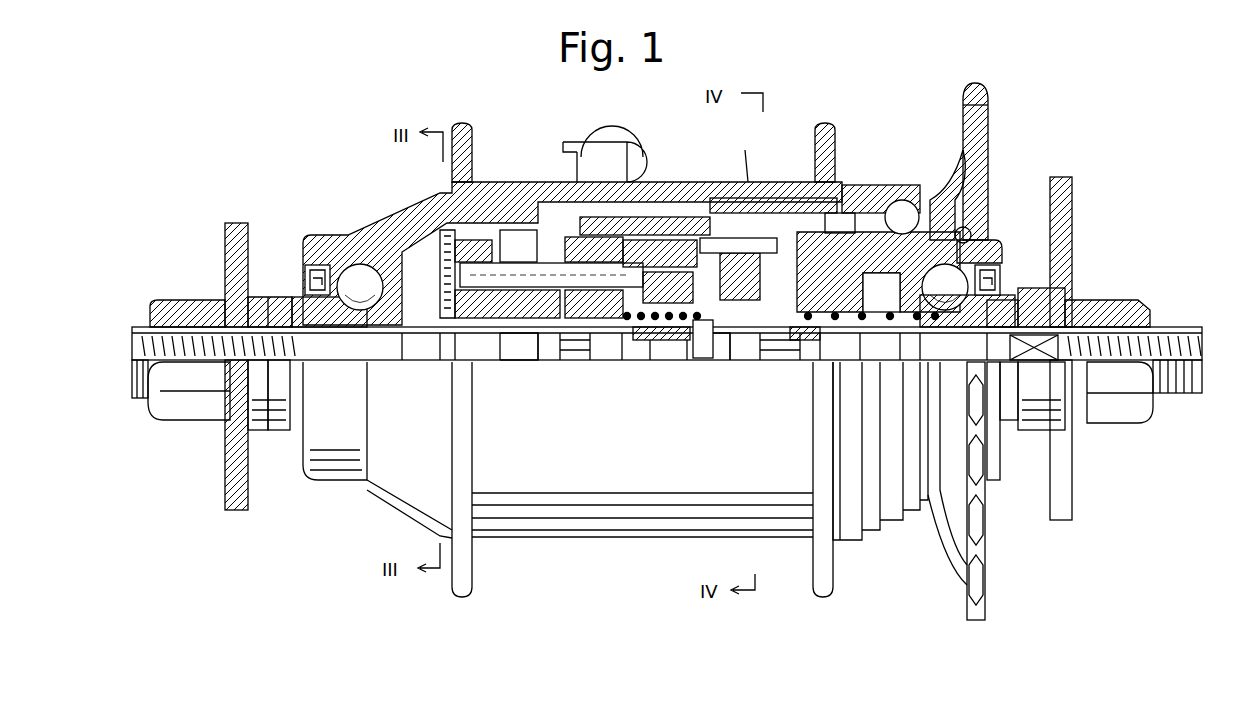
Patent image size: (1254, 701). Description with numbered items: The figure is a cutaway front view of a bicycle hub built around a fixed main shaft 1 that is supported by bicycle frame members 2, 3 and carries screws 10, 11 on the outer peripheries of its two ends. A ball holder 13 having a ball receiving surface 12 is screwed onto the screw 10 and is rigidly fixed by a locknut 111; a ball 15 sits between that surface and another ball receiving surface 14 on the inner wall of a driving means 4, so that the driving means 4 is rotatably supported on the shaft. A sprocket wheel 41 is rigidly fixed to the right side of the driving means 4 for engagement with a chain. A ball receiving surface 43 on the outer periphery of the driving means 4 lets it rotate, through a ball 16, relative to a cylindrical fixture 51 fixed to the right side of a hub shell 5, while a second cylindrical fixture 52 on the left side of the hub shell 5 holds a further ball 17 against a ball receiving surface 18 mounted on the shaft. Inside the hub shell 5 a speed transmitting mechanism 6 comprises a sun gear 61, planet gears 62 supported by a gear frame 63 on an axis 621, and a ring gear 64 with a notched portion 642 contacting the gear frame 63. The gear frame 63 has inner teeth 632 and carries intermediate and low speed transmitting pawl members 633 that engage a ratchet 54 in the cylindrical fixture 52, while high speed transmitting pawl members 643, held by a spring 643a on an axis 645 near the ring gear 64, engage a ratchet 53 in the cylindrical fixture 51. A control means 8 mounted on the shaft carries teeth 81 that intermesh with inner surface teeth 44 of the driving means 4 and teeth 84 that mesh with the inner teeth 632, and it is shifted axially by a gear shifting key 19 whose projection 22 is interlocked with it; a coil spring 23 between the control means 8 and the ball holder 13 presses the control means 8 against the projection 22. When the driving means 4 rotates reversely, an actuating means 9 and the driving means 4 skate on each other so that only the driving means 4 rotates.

The fixed main shaft 1 is at (1194, 322).
The screw 10 is at (1182, 366).
The screw 11 is at (146, 330).
The locknut 111 is at (1122, 309).
The bicycle frame member 2 is at (1074, 214).
The bicycle frame member 3 is at (232, 249).
The driving means 4 is at (1013, 200).
The sprocket wheel 41 is at (987, 113).
The ball receiving surface 43 is at (943, 213).
The inner surface teeth 44 is at (881, 290).
The hub shell 5 is at (540, 186).
The cylindrical fixture 51 is at (852, 196).
The cylindrical fixture 52 is at (415, 212).
The ratchet 53 is at (846, 193).
The ratchet 54 is at (477, 222).
The speed transmitting mechanism 6 is at (824, 198).
The sun gear 61 is at (577, 350).
The planet gears 62 is at (594, 246).
The axis 621 is at (533, 320).
The gear frame 63 is at (684, 232).
The inner teeth 632 is at (672, 332).
The intermediate and low speed transmitting pawl members 633 is at (517, 255).
The ring gear 64 is at (683, 232).
The notched portion 642 is at (687, 333).
The high speed transmitting pawl members 643 is at (742, 222).
The spring 643a is at (748, 150).
The axis 645 is at (771, 370).
The control means 8 is at (737, 292).
The teeth 81 is at (840, 227).
The teeth 84 is at (650, 322).
The actuating means 9 is at (838, 255).
The ball receiving surface 12 is at (940, 368).
The ball holder 13 is at (1022, 300).
The ball receiving surface 14 is at (990, 242).
The ball 15 is at (996, 273).
The ball 16 is at (910, 203).
The ball 17 is at (357, 278).
The ball receiving surface 18 is at (304, 306).
The gear shifting key 19 is at (713, 356).
The projection 22 is at (708, 350).
The coil spring 23 is at (807, 337).